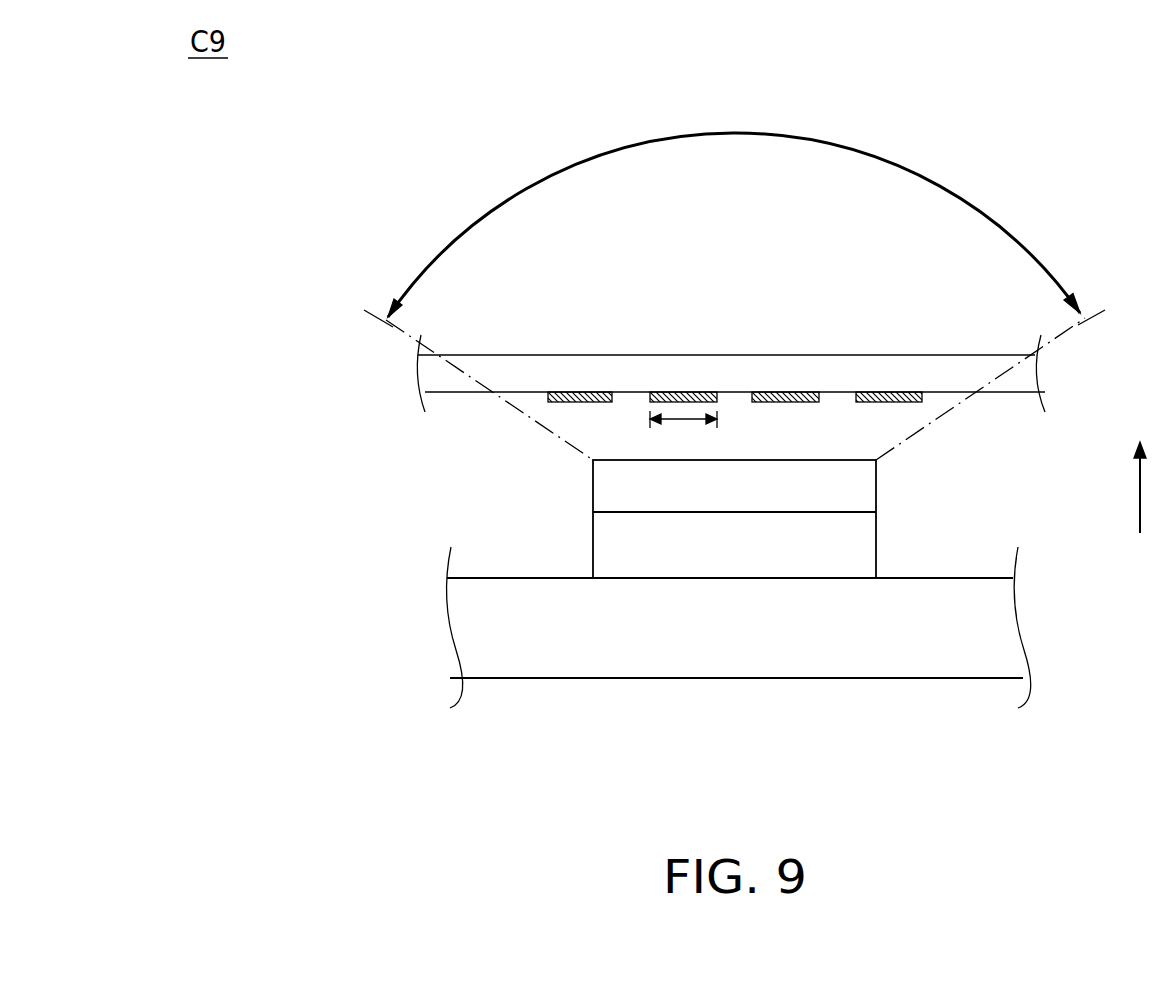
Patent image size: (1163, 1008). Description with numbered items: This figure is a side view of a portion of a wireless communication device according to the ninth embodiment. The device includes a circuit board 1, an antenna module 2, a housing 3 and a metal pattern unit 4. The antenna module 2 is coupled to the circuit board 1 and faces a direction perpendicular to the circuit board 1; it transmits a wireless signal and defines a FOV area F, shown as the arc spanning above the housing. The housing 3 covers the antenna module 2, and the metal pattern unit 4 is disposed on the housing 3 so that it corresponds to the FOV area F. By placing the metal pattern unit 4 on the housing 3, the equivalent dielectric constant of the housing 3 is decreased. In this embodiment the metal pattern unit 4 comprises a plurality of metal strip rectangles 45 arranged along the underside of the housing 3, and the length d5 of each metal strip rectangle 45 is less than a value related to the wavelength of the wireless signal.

The circuit board 1 is at (786, 660).
The antenna module 2 is at (879, 487).
The housing 3 is at (626, 372).
The metal pattern unit 4 is at (735, 321).
The metal strip rectangle 45 is at (793, 392).
The length of metal strip rectangle d5 is at (683, 432).
The FOV area F is at (734, 281).